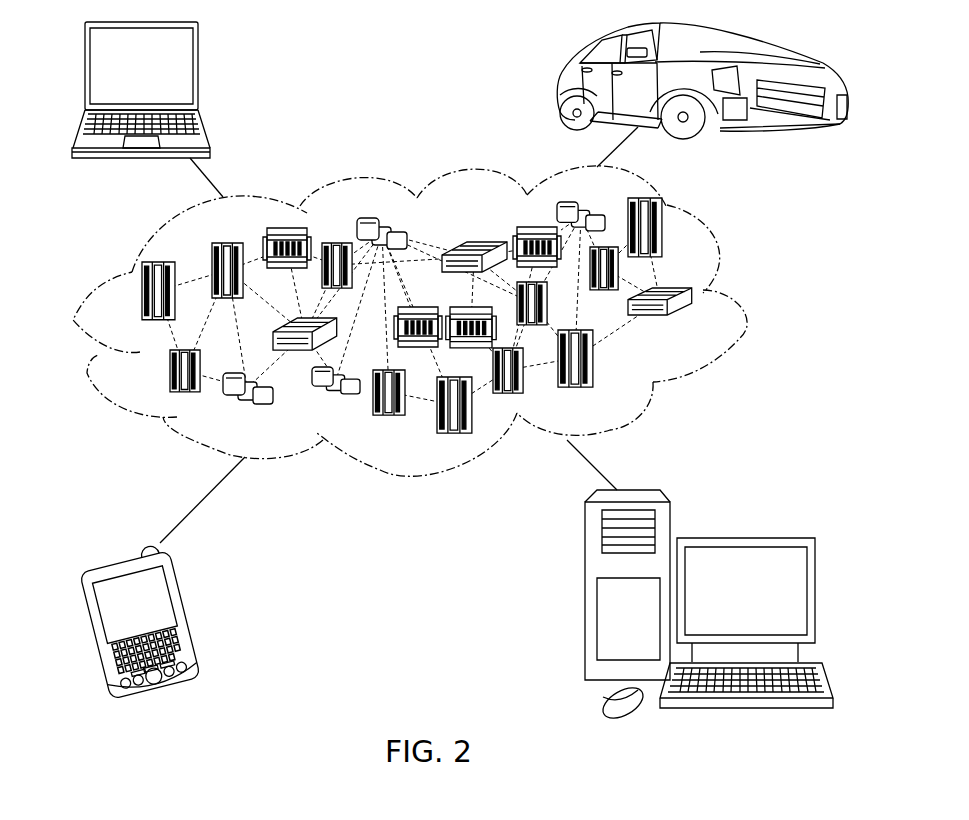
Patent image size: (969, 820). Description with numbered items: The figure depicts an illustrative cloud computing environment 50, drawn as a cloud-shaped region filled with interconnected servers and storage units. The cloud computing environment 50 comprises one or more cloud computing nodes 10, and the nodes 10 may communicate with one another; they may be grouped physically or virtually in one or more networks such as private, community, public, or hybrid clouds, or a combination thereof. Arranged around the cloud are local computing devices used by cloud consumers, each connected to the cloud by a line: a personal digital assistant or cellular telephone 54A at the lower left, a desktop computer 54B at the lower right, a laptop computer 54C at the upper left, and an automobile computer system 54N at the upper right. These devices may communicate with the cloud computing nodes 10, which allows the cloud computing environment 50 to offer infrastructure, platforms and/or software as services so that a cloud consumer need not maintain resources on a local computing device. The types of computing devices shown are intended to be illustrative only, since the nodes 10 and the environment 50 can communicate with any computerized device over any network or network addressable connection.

The cloud computing node 10 is at (701, 327).
The cloud computing environment 50 is at (431, 321).
The personal digital assistant or cellular telephone 54A is at (192, 616).
The desktop computer 54B is at (742, 536).
The laptop computer 54C is at (199, 69).
The automobile computer system 54N is at (558, 86).